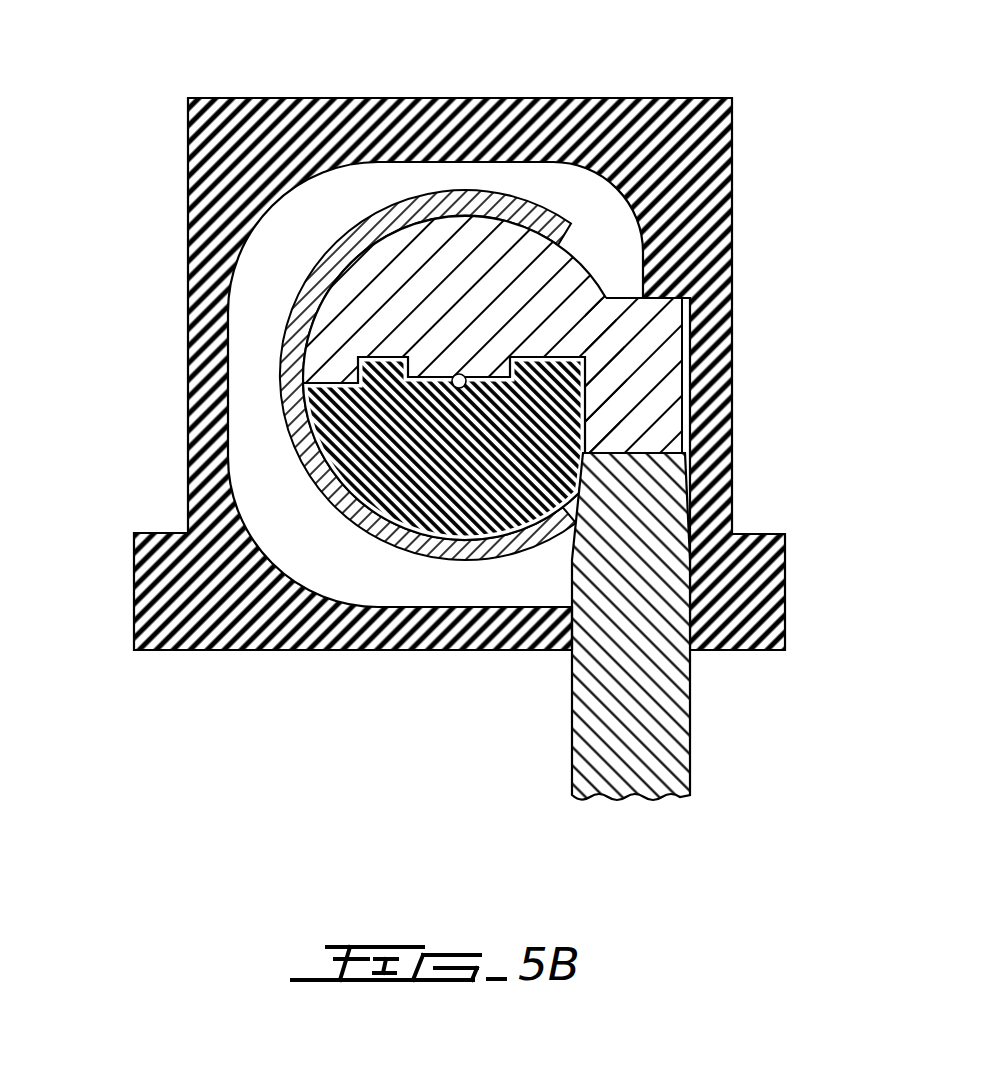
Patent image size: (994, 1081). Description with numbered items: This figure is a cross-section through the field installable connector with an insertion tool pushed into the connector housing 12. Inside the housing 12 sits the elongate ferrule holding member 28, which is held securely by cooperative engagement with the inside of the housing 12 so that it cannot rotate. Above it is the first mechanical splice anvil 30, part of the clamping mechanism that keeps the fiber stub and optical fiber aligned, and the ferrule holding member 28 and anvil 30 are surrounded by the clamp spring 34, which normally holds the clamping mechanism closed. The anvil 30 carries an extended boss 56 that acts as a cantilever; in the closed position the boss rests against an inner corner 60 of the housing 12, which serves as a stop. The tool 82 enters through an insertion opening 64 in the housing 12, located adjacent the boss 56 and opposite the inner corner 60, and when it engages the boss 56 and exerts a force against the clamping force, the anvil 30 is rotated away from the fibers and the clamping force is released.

The housing 12 is at (707, 177).
The ferrule holding member 28 is at (378, 428).
The first mechanical splice anvil 30 is at (467, 263).
The clamp spring 34 is at (307, 302).
The extended boss 56 is at (640, 393).
The inner corner 60 is at (710, 317).
The insertion opening 64 is at (570, 667).
The stem 82 is at (665, 703).